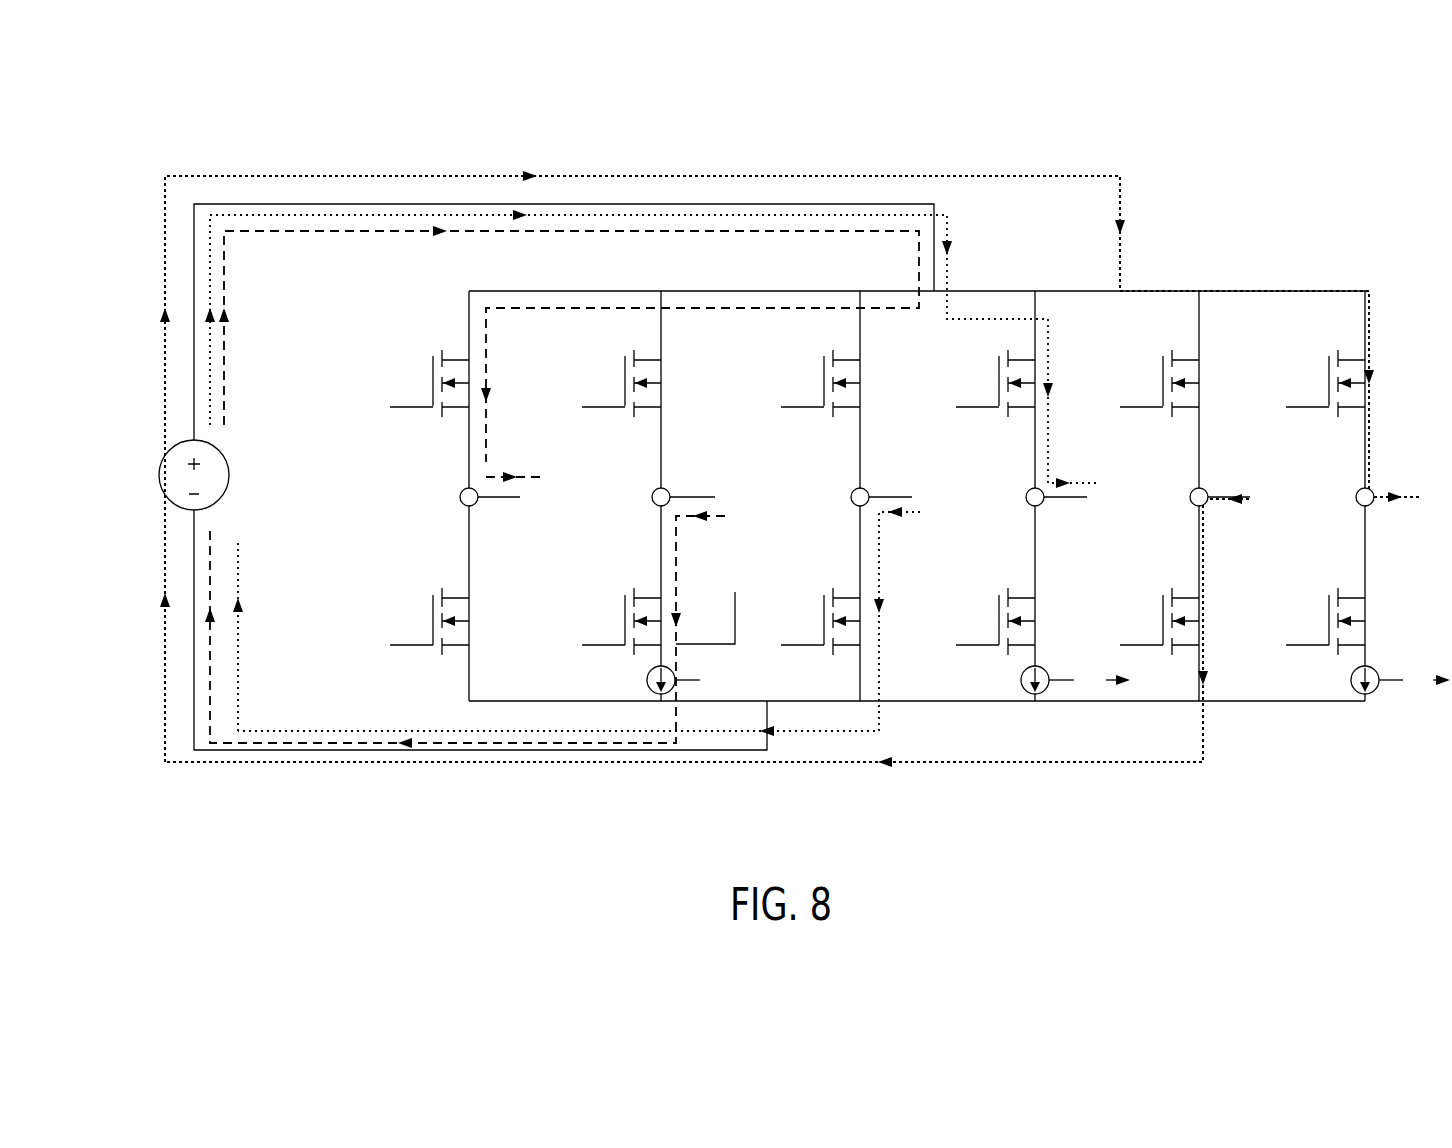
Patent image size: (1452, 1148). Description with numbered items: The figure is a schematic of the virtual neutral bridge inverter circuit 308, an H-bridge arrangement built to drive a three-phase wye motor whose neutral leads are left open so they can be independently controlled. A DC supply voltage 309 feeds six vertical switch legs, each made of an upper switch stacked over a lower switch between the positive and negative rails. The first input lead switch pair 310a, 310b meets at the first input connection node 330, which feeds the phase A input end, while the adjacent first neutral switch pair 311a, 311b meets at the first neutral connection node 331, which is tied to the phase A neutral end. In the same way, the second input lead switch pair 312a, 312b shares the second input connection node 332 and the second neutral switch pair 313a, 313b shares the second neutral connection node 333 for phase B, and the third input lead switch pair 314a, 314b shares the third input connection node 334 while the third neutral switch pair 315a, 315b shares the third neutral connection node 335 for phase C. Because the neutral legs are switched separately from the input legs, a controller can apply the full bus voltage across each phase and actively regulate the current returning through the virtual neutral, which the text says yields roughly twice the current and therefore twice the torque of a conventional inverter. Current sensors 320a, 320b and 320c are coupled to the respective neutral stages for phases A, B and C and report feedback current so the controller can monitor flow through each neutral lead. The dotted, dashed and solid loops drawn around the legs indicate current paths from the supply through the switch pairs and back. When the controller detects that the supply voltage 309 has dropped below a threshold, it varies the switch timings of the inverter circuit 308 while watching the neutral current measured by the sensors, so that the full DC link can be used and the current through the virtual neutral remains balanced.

The virtual neutral bridge inverter circuit 308 is at (217, 160).
The supply voltage 309 is at (165, 447).
The switch 310a is at (420, 327).
The switch 310b is at (432, 582).
The switch 311a is at (583, 333).
The switch 311b is at (628, 584).
The switch 312a is at (748, 337).
The switch 312b is at (823, 584).
The switch 313a is at (943, 337).
The switch 313b is at (1000, 583).
The switch 314a is at (1158, 333).
The switch 314b is at (1160, 583).
The switch 315a is at (1322, 333).
The switch 315b is at (1325, 583).
The current sensor 320a is at (678, 705).
The current sensor 320b is at (1052, 705).
The current sensor 320c is at (1350, 705).
The first input connection node 330 is at (461, 491).
The first neutral connection node 331 is at (653, 491).
The second input connection node 332 is at (852, 491).
The second neutral connection node 333 is at (1027, 491).
The third input connection node 334 is at (1191, 491).
The third neutral connection node 335 is at (1357, 491).